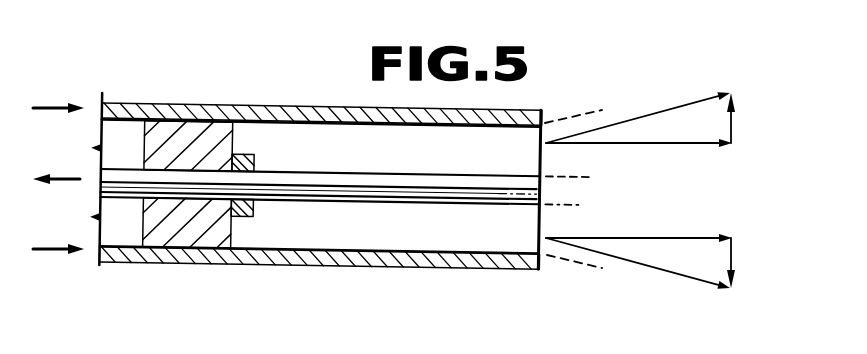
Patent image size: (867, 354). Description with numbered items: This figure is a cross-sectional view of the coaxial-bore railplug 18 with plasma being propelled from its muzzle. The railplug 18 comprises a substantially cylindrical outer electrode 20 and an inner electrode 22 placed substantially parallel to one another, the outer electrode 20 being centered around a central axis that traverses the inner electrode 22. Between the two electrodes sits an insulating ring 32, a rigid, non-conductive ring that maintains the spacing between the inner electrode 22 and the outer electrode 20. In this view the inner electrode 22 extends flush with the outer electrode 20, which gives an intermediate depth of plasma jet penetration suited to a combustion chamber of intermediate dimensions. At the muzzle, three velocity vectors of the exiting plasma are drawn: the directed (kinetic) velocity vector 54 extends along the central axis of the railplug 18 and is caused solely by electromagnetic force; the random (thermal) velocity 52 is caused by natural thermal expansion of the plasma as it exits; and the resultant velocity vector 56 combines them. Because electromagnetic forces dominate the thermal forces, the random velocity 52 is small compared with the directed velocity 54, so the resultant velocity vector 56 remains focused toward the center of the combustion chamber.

The coaxial-bore railplug 18 is at (254, 96).
The outer electrode 20 is at (313, 106).
The inner electrode 22 is at (387, 173).
The insulating ring 32 is at (205, 120).
The random (thermal) velocity 52 is at (734, 120).
The directed (kinetic) velocity vector 54 is at (671, 150).
The resultant velocity vector 56 is at (657, 112).